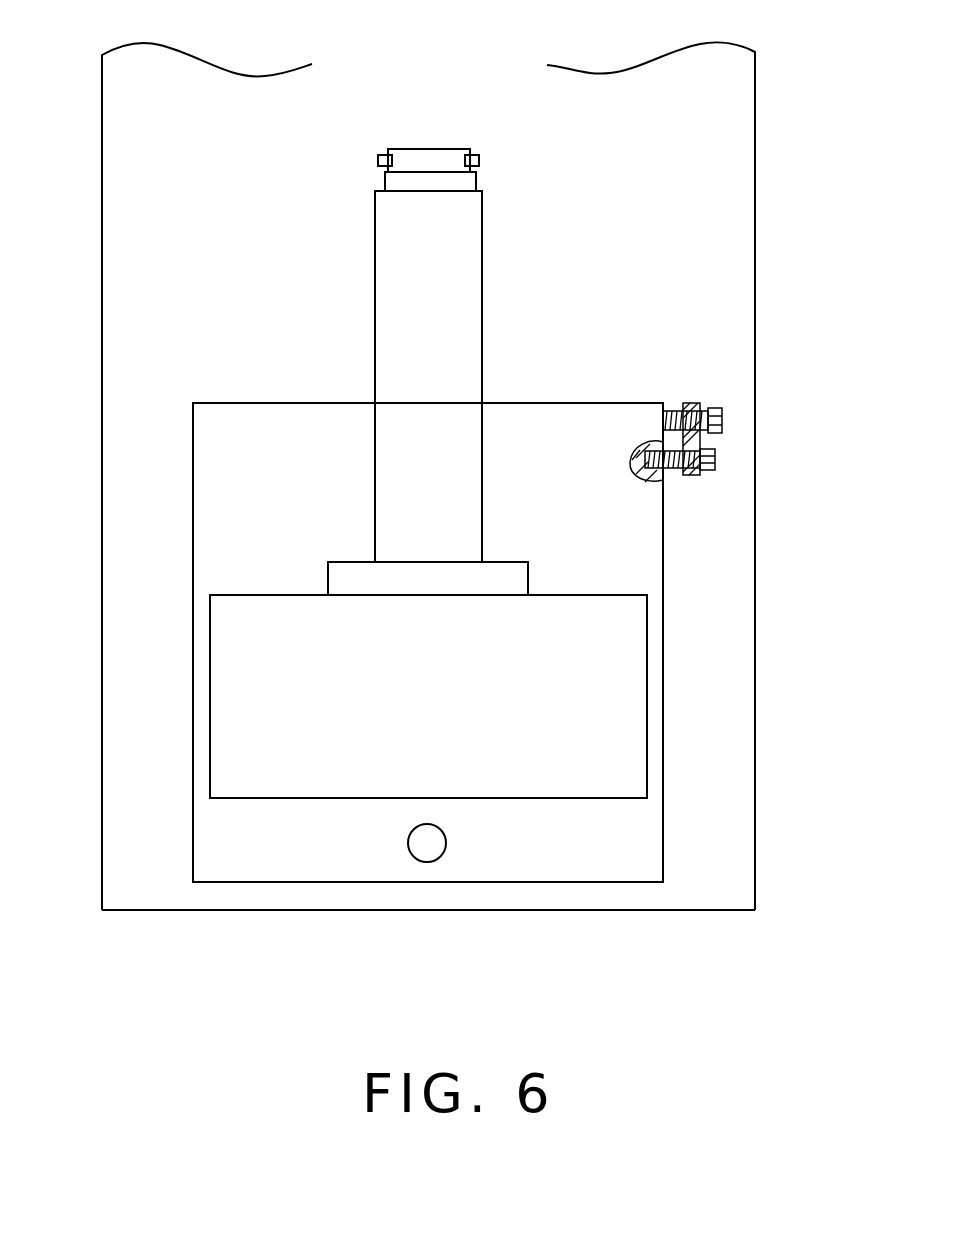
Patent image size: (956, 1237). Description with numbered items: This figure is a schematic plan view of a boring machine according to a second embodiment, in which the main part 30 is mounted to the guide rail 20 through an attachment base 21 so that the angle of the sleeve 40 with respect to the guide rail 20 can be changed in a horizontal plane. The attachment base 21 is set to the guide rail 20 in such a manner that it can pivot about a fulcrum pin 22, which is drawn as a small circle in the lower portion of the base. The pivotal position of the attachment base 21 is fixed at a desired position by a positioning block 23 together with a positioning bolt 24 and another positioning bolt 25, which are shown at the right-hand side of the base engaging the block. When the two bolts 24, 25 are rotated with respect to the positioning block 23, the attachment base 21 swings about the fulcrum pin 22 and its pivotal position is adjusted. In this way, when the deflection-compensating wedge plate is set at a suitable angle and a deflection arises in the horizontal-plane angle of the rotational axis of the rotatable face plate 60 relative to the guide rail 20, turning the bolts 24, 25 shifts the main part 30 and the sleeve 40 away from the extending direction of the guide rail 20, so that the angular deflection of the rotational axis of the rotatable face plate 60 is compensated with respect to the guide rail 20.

The guide rail 20 is at (728, 108).
The attachment base 21 is at (547, 430).
The fulcrum pin 22 is at (427, 845).
The positioning block 23 is at (693, 405).
The positioning bolt 24 is at (718, 410).
The positioning bolt 25 is at (707, 470).
The main part 30 is at (230, 712).
The sleeve 40 is at (462, 279).
The rotatable face plate 60 is at (434, 163).